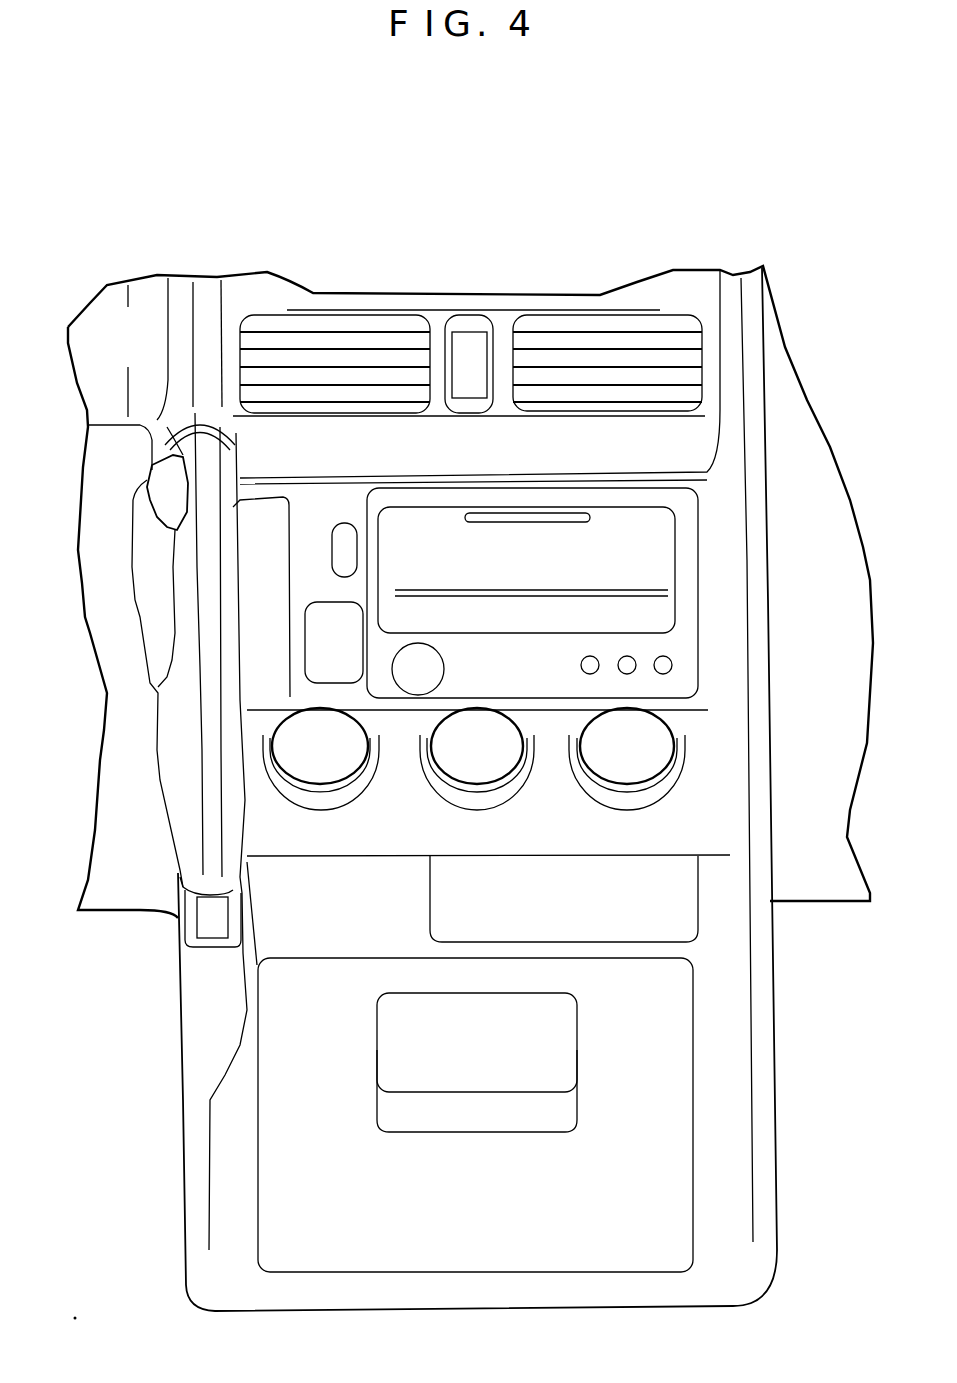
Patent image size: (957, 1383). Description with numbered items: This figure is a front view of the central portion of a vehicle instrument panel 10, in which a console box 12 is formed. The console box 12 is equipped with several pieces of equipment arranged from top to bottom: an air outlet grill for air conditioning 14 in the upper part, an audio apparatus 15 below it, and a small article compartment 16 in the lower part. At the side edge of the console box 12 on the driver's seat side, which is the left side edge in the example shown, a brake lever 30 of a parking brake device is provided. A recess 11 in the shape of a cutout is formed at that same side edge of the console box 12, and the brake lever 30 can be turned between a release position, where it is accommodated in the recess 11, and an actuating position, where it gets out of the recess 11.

The instrument panel 10 is at (80, 581).
The recess 11 is at (158, 582).
The console box 12 is at (214, 298).
The air outlet grill for air conditioning 14 is at (325, 340).
The audio apparatus 15 is at (662, 567).
The small article compartment 16 is at (495, 1201).
The brake lever 30 is at (170, 703).